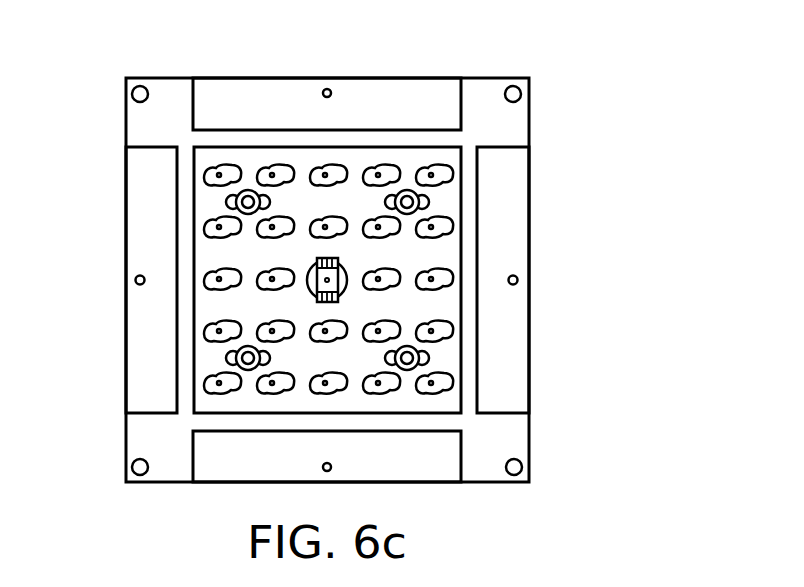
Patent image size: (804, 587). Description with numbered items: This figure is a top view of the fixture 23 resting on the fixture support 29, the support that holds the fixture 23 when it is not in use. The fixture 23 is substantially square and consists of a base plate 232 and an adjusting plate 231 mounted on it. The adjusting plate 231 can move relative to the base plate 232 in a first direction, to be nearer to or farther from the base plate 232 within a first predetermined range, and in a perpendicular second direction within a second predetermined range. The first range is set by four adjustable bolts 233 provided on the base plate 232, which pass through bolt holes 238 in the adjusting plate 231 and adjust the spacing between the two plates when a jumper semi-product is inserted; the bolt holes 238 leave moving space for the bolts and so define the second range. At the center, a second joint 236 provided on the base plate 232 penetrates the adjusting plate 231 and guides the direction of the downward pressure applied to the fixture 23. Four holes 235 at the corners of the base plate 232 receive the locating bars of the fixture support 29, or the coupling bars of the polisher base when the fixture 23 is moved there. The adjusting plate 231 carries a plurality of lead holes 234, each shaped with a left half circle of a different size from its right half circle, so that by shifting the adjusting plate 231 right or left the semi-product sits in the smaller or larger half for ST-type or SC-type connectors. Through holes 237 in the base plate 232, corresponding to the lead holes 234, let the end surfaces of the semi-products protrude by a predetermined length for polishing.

The fixture 23 is at (548, 36).
The fixture support 29 is at (529, 250).
The adjusting plate 231 is at (204, 332).
The base plate 232 is at (529, 130).
The adjustable bolts 233 is at (429, 201).
The lead holes 234 is at (453, 332).
The holes 235 is at (132, 94).
The second joint 236 is at (326, 279).
The through holes 237 is at (219, 228).
The bolt holes 238 is at (429, 360).